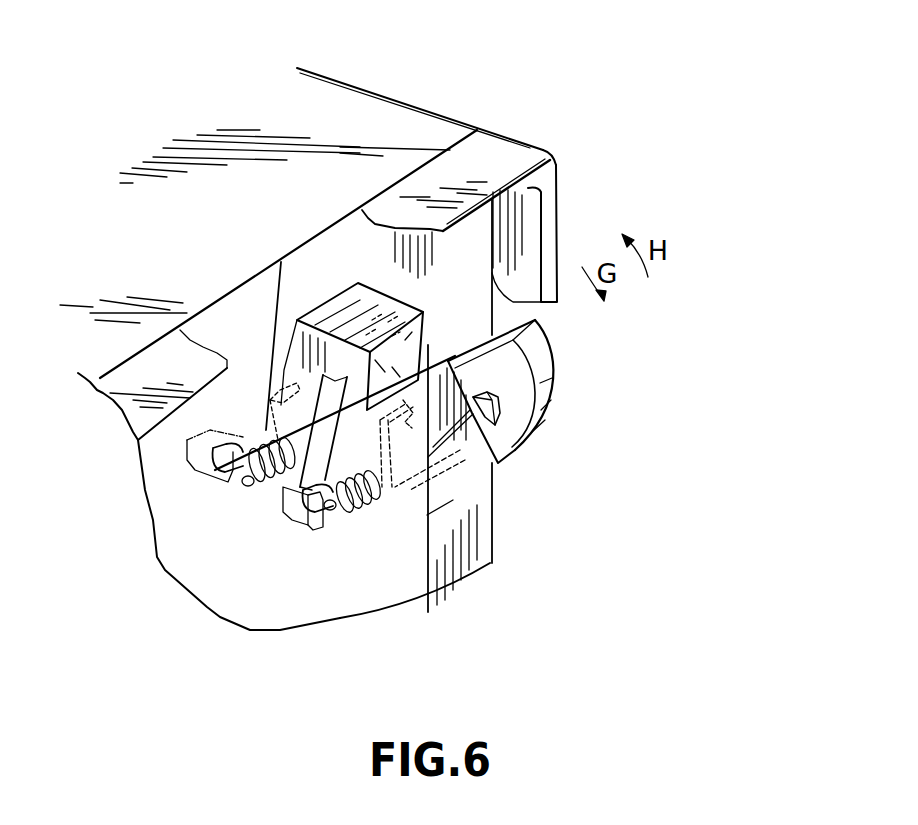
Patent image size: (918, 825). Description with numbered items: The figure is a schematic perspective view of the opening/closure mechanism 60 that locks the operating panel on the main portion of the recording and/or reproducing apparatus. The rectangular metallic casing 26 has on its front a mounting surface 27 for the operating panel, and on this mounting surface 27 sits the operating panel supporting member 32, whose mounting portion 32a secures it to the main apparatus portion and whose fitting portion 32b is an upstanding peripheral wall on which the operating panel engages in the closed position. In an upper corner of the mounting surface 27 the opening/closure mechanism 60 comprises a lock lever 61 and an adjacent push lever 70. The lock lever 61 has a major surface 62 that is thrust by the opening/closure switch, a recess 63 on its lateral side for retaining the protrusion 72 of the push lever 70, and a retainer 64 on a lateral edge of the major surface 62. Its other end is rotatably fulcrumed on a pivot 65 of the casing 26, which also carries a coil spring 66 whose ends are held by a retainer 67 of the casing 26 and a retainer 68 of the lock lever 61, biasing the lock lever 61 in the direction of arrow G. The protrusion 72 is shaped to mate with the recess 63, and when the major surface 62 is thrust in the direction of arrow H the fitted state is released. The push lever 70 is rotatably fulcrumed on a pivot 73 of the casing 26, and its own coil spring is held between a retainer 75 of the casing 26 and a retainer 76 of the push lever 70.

The casing 26 is at (433, 127).
The mounting surface 27 is at (392, 593).
The operating panel supporting member 32 is at (505, 155).
The mounting portion 32a is at (540, 148).
The fitting portion 32b is at (542, 226).
The opening/closure mechanism 60 is at (655, 113).
The lock lever 61 is at (296, 321).
The major surface 62 is at (387, 352).
The recess 63 is at (412, 302).
The retainer 64 is at (335, 423).
The pivot 65 is at (246, 486).
The coil spring 66 is at (290, 488).
The retainer 67 is at (280, 287).
The retainer 68 is at (277, 402).
The push lever 70 is at (513, 377).
The protrusion 72 is at (500, 423).
The pivot 73 is at (328, 520).
The retainer 75 is at (310, 527).
The retainer 76 is at (422, 445).